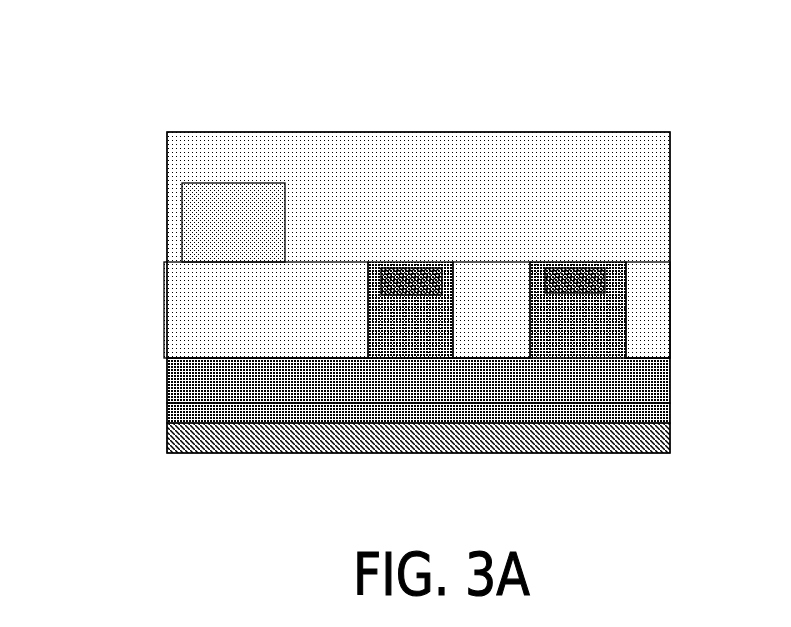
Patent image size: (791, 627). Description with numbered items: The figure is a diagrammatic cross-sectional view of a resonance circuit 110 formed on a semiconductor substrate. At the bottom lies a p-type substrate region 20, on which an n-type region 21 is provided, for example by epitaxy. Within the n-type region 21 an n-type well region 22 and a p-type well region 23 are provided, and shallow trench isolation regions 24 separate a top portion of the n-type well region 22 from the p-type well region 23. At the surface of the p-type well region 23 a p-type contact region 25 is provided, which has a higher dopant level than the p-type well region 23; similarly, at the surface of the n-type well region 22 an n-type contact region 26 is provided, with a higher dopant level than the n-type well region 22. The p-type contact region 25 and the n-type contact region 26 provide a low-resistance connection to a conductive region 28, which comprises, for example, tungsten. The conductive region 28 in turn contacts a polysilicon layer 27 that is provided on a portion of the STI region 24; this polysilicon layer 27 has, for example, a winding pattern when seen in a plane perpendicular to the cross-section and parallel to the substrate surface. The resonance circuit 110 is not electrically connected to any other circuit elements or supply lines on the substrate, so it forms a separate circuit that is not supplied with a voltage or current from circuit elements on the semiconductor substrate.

The resonance circuit 110 is at (140, 88).
The p-type substrate region 20 is at (230, 447).
The n-type region 21 is at (175, 412).
The n-type well region 22 is at (259, 392).
The p-type well region 23 is at (427, 375).
The shallow trench isolation region 24 is at (281, 322).
The p-type contact region 25 is at (420, 272).
The n-type contact region 26 is at (578, 277).
The polysilicon layer 27 is at (247, 236).
The conductive region 28 is at (327, 171).